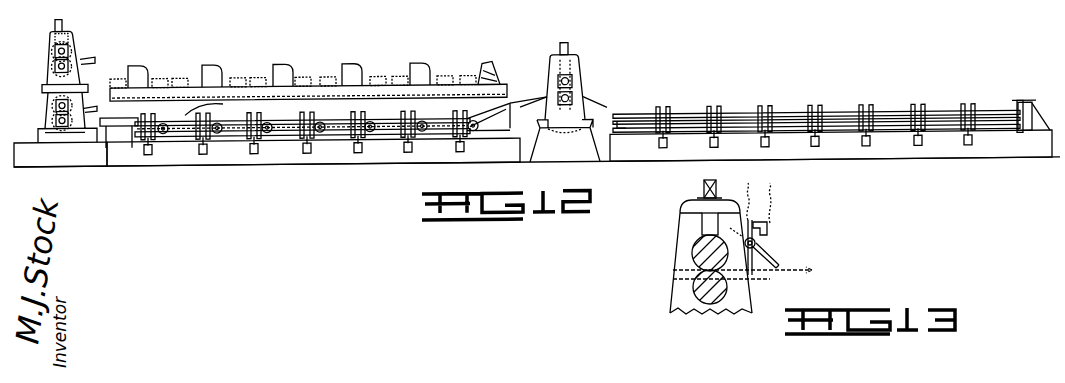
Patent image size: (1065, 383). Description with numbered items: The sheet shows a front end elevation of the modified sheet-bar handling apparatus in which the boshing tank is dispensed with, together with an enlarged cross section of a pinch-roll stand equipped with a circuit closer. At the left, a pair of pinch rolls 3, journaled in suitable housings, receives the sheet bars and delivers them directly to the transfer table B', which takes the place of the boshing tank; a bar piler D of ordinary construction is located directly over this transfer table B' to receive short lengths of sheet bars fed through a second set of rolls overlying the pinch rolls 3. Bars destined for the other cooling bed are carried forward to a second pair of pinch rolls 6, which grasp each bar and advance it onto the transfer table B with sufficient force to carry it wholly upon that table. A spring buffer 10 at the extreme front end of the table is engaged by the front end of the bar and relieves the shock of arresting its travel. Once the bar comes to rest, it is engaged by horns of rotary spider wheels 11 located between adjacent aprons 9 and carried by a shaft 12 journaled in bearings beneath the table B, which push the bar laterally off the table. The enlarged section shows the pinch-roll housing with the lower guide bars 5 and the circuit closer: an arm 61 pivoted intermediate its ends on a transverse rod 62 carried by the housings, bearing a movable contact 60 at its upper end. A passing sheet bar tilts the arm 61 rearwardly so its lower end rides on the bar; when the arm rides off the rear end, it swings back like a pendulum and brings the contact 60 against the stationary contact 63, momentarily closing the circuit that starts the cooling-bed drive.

In FIG. 12, the pinch rolls 3 is at (47, 97).
In FIG. 12, the bar piler D is at (308, 77).
In FIG. 12, the transfer table B' is at (323, 126).
In FIG. 12, the pinch rolls 6 is at (582, 88).
In FIG. 12, the transfer table B is at (816, 117).
In FIG. 12, the rotary spider wheels 11 is at (722, 120).
In FIG. 12, the aprons 9 is at (788, 117).
In FIG. 12, the spring buffer 10 is at (1020, 112).
In FIG. 12, the shaft 12 is at (787, 140).
In FIG. 13, the lower set of guide bars 5 is at (698, 279).
In FIG. 13, the movable contact 60 is at (758, 224).
In FIG. 13, the arm or bar 61 is at (772, 263).
In FIG. 13, the transverse rod 62 is at (756, 243).
In FIG. 13, the stationary contact 63 is at (765, 232).